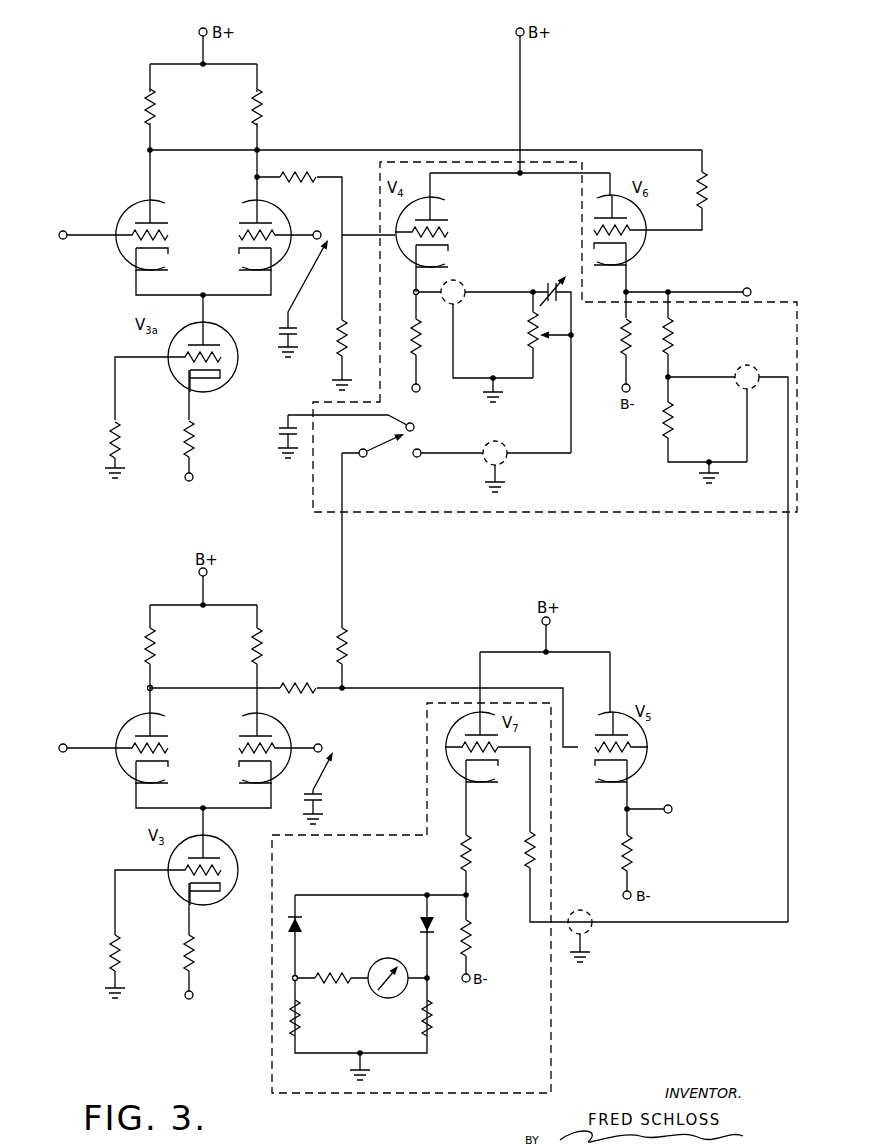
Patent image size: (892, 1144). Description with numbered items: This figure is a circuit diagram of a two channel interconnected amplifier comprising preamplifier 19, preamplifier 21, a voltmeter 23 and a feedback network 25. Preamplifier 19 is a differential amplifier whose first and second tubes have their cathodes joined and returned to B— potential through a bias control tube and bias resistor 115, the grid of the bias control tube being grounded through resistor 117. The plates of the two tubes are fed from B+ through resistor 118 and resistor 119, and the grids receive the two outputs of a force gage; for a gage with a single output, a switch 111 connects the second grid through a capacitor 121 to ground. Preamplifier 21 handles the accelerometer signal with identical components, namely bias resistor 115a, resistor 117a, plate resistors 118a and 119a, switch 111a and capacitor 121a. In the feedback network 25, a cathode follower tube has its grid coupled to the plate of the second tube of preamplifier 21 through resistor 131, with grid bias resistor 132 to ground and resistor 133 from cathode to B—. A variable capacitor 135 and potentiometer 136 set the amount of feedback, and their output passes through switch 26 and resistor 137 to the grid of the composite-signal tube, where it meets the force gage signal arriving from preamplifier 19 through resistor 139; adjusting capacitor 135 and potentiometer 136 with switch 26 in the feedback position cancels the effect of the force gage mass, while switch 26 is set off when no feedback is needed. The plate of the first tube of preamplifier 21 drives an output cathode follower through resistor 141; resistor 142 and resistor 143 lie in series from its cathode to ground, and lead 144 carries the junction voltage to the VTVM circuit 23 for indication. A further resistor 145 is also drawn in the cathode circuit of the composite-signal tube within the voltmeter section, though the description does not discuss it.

The preamplifier 19 is at (214, 760).
The preamplifier 21 is at (214, 245).
The voltmeter 23 is at (356, 870).
The feedback network 25 is at (561, 514).
The switch 26 is at (383, 446).
The switch 111 is at (336, 771).
The switch 111a is at (316, 276).
The bias resistor 115 is at (192, 955).
The bias resistor 115a is at (192, 428).
The resistor 117 is at (108, 955).
The resistor 117a is at (108, 428).
The resistor 118 is at (145, 646).
The resistor 118a is at (145, 105).
The resistor 119 is at (252, 648).
The resistor 119a is at (268, 99).
The capacitor 121 is at (325, 800).
The capacitor 121a is at (283, 323).
The resistor 131 is at (301, 238).
The grid bias resistor 132 is at (338, 340).
The resistor 133 is at (420, 348).
The variable capacitor 135 is at (536, 283).
The potentiometer 136 is at (528, 331).
The resistor 137 is at (346, 648).
The resistor 139 is at (364, 704).
The resistor 141 is at (706, 186).
The resistor 142 is at (672, 328).
The resistor 143 is at (672, 422).
The lead 144 is at (736, 371).
The resistor 145 is at (470, 858).